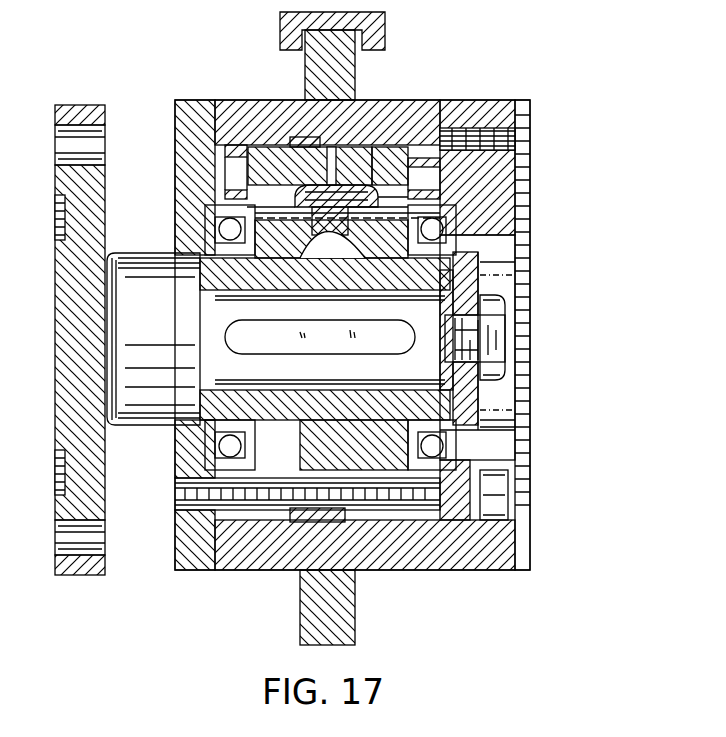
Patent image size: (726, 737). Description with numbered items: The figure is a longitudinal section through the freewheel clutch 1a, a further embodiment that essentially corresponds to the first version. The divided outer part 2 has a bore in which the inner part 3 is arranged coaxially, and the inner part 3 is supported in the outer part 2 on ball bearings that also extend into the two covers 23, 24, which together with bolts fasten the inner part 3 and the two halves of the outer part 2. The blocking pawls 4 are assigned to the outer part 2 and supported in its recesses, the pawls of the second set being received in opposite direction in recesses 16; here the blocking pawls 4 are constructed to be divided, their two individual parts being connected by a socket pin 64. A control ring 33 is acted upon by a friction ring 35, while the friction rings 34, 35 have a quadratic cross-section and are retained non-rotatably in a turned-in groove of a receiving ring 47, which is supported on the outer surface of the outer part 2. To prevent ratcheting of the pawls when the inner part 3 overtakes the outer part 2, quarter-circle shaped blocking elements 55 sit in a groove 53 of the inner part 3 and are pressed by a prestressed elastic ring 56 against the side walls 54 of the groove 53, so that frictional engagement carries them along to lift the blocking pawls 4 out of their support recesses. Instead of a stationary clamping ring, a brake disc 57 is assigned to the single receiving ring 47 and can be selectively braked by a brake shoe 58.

The freewheel clutch 1a is at (570, 123).
The outer part 2 is at (205, 110).
The inner part 3 is at (390, 450).
The blocking pawls 4 is at (216, 142).
The recesses 16 is at (268, 100).
The cover 23 is at (198, 152).
The cover 24 is at (506, 125).
The control ring 33 is at (387, 140).
The friction ring 34 is at (250, 145).
The friction ring 35 is at (356, 172).
The receiving ring 47 is at (446, 128).
The groove 53 is at (322, 228).
The side walls 54 is at (206, 284).
The blocking elements 55 is at (296, 212).
The elastic ring 56 is at (320, 252).
The brake disc 57 is at (316, 72).
The brake shoe 58 is at (283, 20).
The socket pin 64 is at (512, 203).